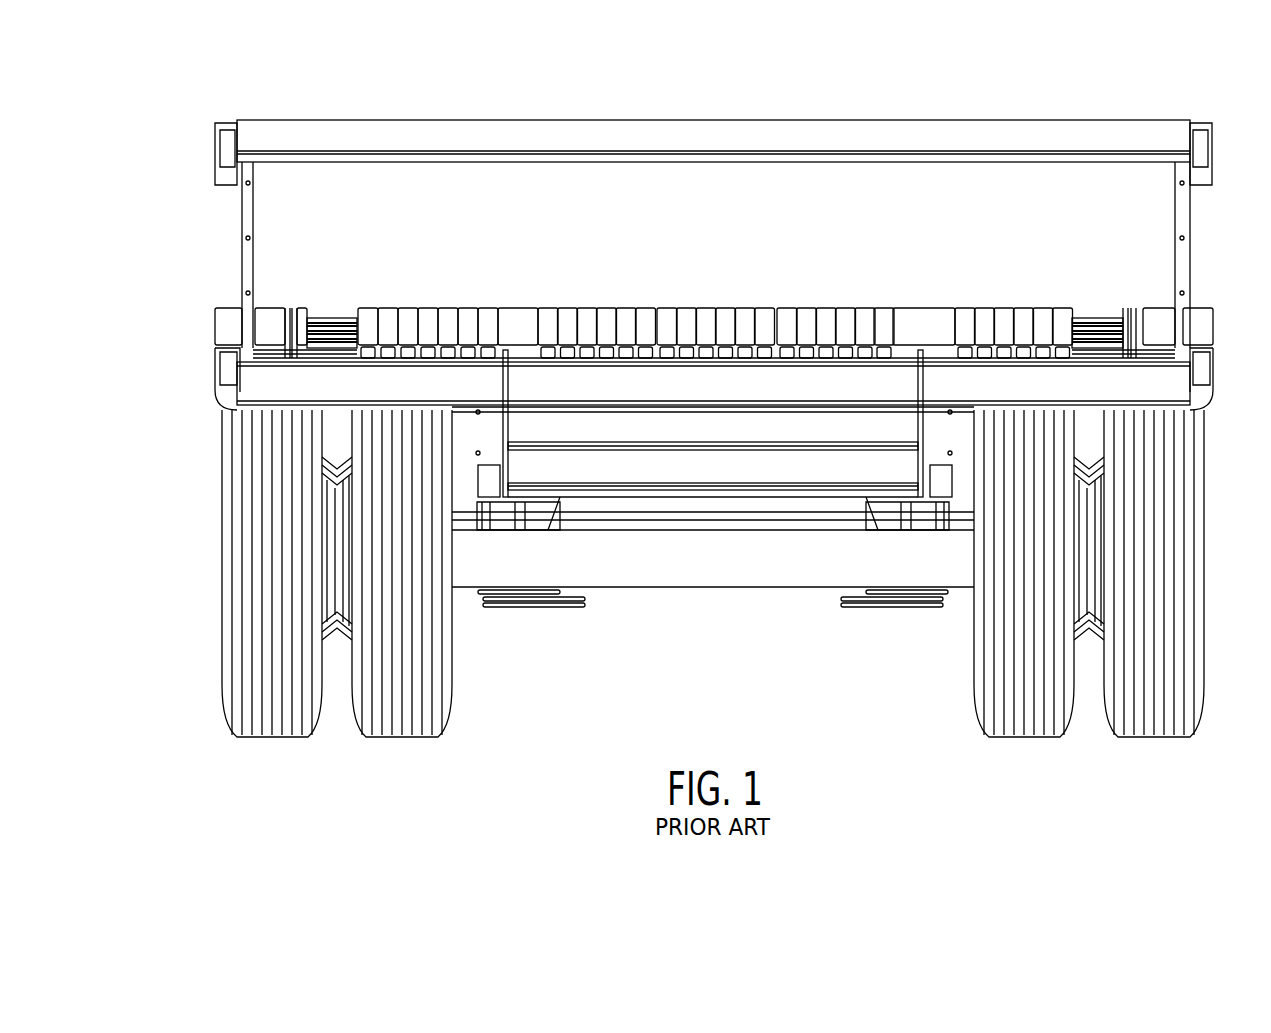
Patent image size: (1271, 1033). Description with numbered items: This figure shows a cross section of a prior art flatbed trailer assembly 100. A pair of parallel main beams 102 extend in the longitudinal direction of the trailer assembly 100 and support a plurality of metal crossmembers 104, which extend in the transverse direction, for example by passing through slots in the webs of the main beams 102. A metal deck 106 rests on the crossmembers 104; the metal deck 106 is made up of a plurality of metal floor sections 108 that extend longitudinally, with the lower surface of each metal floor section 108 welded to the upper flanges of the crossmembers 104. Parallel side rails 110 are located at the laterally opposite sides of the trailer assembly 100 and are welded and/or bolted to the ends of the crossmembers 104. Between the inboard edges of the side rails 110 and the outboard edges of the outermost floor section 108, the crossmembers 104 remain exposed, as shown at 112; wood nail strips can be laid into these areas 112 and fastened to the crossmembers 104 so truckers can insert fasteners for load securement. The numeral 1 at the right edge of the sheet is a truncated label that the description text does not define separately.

The trailer assembly 100 is at (1177, 64).
The end block 1 is at (1205, 323).
The main beams 102 is at (508, 417).
The metal crossmembers 104 is at (359, 352).
The metal deck 106 is at (715, 282).
The metal floor sections 108 is at (448, 318).
The side rails 110 is at (228, 332).
The exposed areas of crossmembers 112 is at (343, 316).